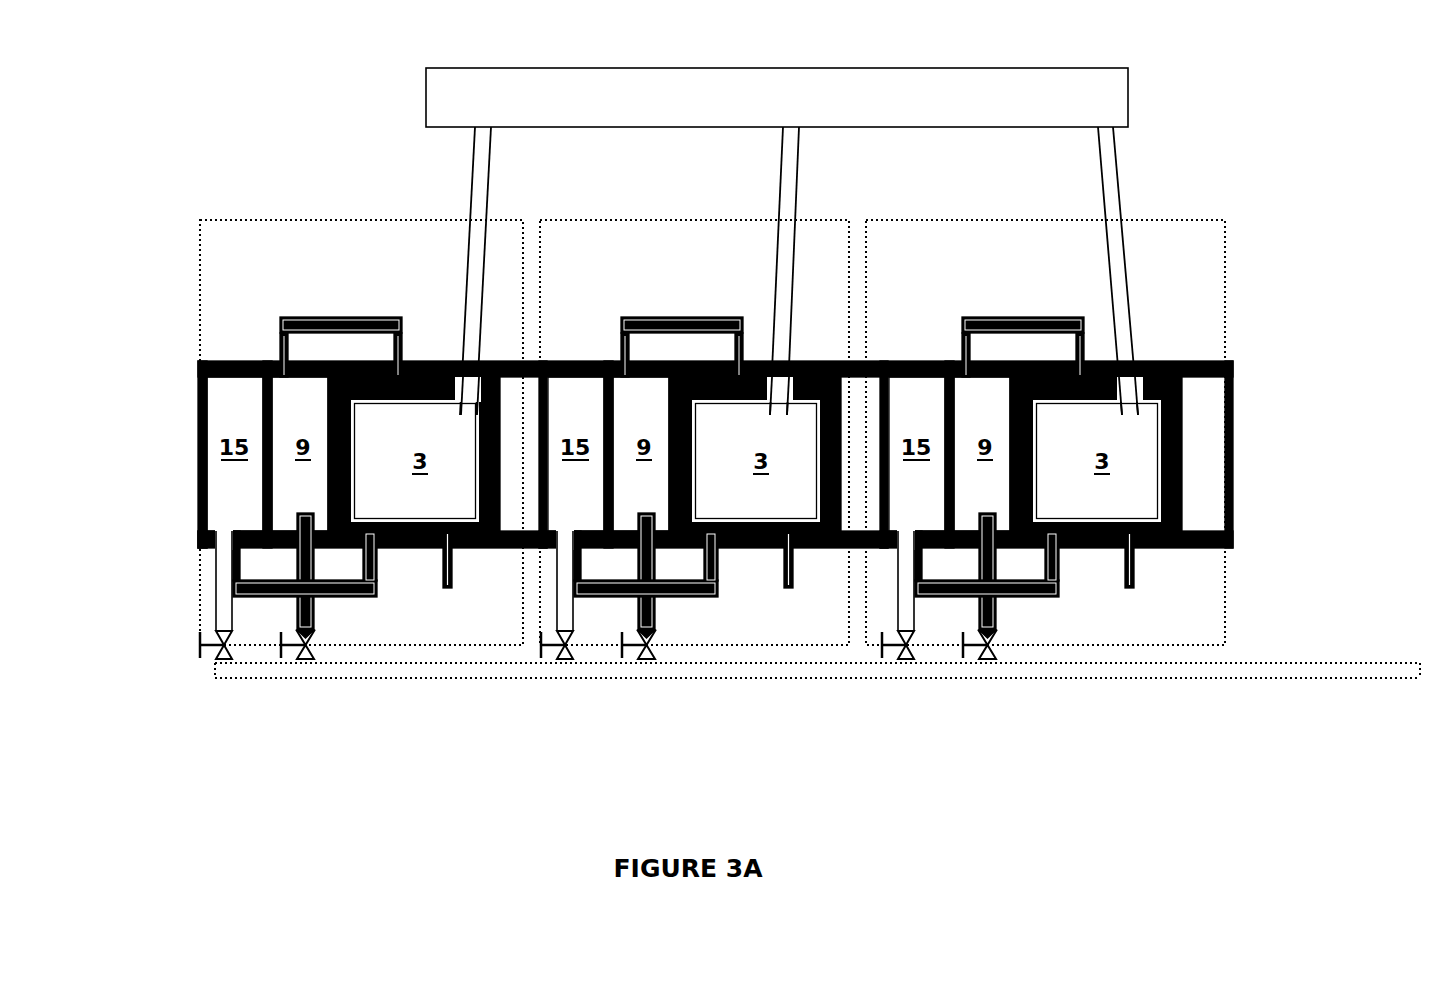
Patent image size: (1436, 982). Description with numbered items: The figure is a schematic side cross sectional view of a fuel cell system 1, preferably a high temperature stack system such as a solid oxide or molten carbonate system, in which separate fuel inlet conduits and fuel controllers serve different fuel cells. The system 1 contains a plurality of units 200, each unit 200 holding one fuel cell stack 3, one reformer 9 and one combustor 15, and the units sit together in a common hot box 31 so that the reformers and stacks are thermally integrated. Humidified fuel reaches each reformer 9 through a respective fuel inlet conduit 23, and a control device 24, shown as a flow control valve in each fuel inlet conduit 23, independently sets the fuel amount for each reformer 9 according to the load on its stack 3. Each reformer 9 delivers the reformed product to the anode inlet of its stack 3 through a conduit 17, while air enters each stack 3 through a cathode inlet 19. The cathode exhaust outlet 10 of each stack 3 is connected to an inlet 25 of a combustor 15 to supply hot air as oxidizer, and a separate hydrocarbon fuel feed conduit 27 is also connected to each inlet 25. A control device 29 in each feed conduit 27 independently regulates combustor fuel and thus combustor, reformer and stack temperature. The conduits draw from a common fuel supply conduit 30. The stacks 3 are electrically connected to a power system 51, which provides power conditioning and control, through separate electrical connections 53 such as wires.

The fuel cell system 1 is at (370, 835).
The fuel cell stack 3 is at (755, 454).
The reformer 9 is at (641, 454).
The cathode exhaust outlet 10 is at (333, 601).
The combustor 15 is at (576, 454).
The conduit 17 is at (364, 314).
The cathode inlet 19 is at (447, 590).
The fuel inlet conduit 23 is at (310, 568).
The control device 24 is at (316, 653).
The combustor inlet 25 is at (205, 549).
The fuel feed conduit 27 is at (214, 615).
The control device 29 is at (238, 651).
The fuel supply conduit 30 is at (414, 681).
The hot box 31 is at (1193, 360).
The power system 51 is at (1132, 100).
The electrical connections 53 is at (783, 170).
The unit 200 is at (374, 216).